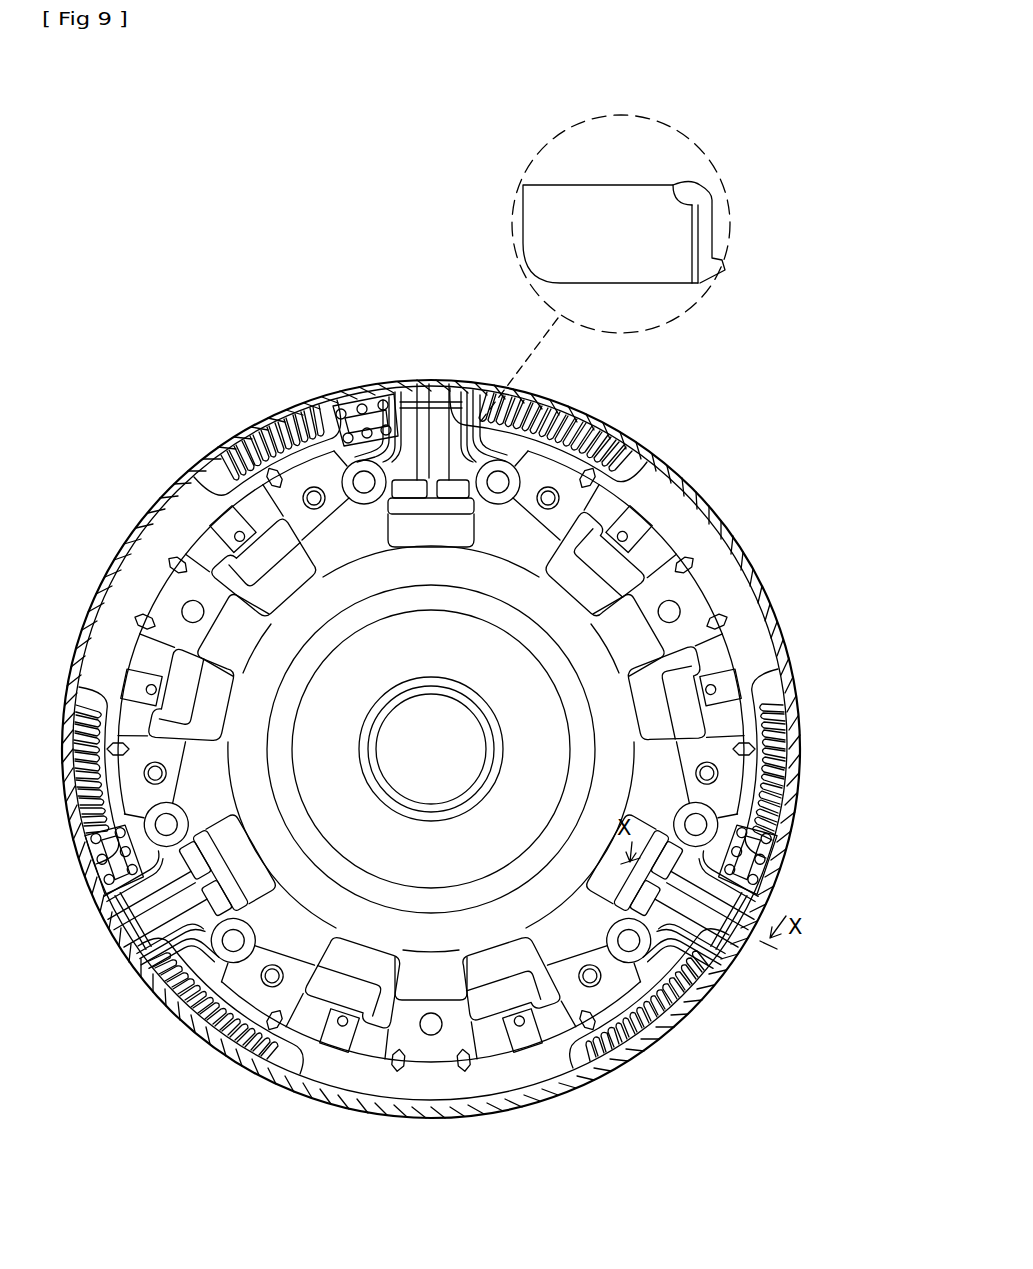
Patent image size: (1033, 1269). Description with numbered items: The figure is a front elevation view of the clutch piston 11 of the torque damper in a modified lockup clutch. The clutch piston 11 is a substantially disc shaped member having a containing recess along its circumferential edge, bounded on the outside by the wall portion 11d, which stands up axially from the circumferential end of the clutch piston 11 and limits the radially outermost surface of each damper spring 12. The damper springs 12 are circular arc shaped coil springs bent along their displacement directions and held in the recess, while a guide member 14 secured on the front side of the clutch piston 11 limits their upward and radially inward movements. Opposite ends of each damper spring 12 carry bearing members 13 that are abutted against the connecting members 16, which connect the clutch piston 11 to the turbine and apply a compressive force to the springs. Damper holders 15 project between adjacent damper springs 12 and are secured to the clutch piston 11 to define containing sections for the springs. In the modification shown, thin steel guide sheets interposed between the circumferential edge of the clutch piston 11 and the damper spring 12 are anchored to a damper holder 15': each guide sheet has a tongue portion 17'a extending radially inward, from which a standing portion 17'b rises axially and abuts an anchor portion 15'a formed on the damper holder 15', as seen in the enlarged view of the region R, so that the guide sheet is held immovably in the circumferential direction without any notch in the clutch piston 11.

The clutch piston 11 is at (648, 424).
The wall portion 11d is at (699, 491).
The damper spring 12 is at (277, 437).
The bearing member 13 is at (373, 402).
The guide member 14 is at (183, 507).
The damper holder 15 is at (461, 931).
The damper holder 15' is at (601, 264).
The anchor portion 15'a is at (735, 233).
The connecting member 16 is at (452, 402).
The tongue portion 17'a is at (426, 583).
The standing portion 17'b is at (737, 253).
The region R is at (347, 437).